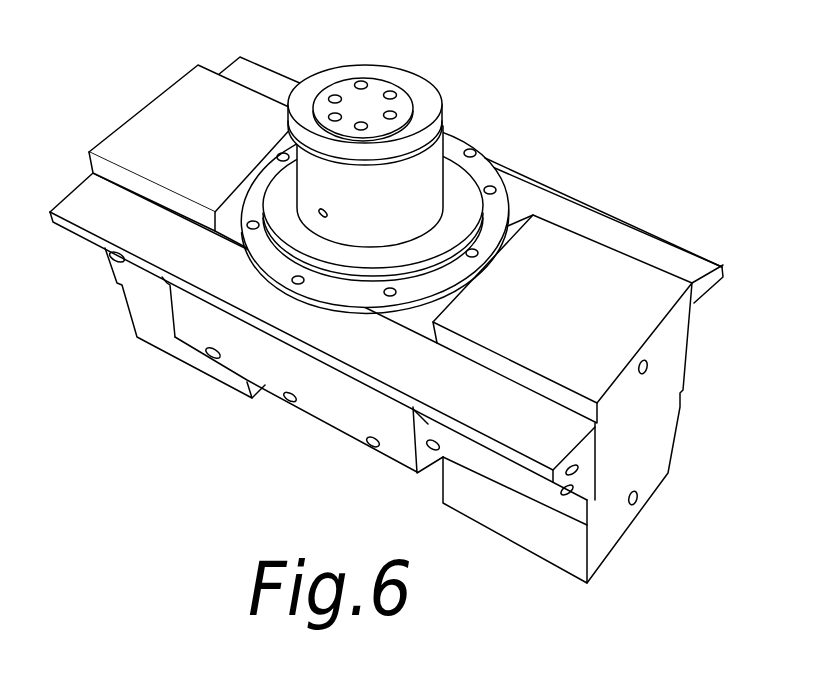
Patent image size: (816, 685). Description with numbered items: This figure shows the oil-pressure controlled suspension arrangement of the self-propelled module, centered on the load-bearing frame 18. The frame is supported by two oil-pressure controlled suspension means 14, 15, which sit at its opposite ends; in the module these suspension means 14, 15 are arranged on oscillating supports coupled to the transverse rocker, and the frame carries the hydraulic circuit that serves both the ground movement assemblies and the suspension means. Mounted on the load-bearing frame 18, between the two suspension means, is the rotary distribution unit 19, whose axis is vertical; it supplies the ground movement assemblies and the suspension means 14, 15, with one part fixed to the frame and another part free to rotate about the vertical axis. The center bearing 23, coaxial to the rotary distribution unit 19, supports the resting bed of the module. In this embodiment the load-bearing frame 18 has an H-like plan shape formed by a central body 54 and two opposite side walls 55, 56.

The oil-pressure controlled suspension means 14 is at (180, 122).
The oil-pressure controlled suspension means 15 is at (623, 330).
The load-bearing frame 18 is at (535, 183).
The rotary distribution unit 19 is at (441, 176).
The center bearing 23 is at (282, 263).
The central body 54 is at (298, 370).
The side wall 55 is at (417, 378).
The side wall 56 is at (623, 233).